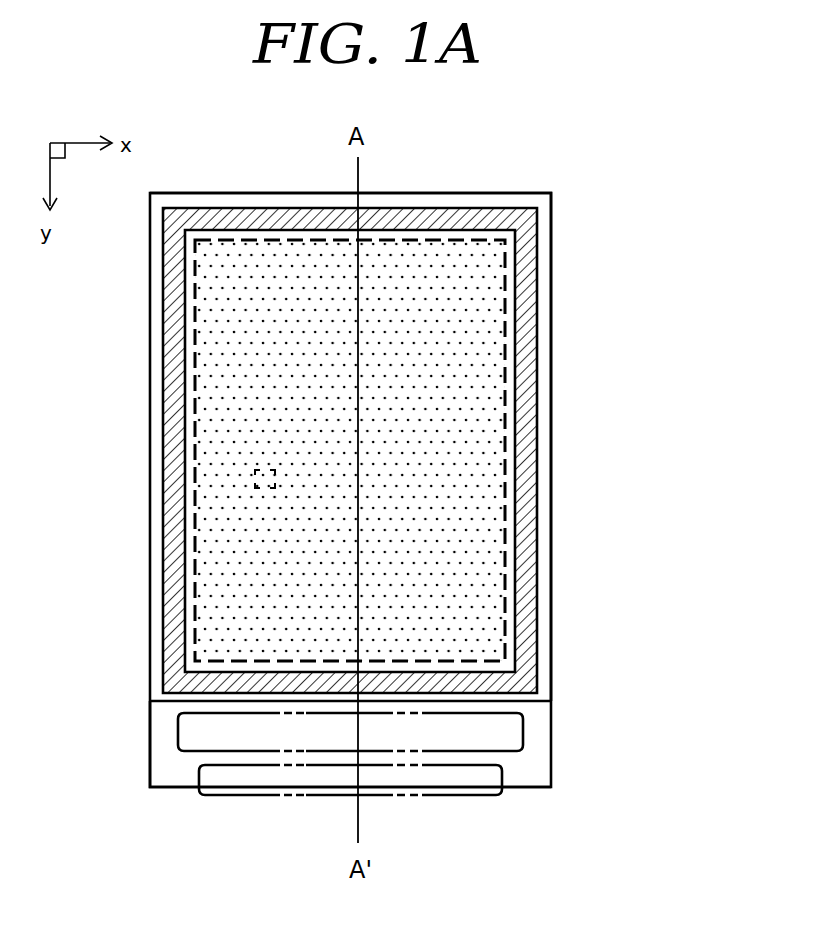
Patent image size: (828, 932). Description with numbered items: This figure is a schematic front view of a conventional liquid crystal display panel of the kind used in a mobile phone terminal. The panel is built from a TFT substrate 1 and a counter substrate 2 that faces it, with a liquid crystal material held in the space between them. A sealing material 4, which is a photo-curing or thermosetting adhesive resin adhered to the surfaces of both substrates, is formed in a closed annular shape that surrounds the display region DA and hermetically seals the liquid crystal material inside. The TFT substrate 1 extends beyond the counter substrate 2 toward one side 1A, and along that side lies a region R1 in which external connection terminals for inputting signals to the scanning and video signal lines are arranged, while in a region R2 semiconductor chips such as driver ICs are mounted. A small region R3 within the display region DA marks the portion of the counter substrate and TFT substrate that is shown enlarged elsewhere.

The one side of the TFT substrate 1A is at (183, 788).
The TFT substrate 1 is at (165, 765).
The counter substrate 2 is at (459, 200).
The sealing material 4 is at (279, 210).
The display region DA is at (475, 367).
The region R1 is at (503, 778).
The region R2 is at (525, 732).
The region R3 is at (253, 482).